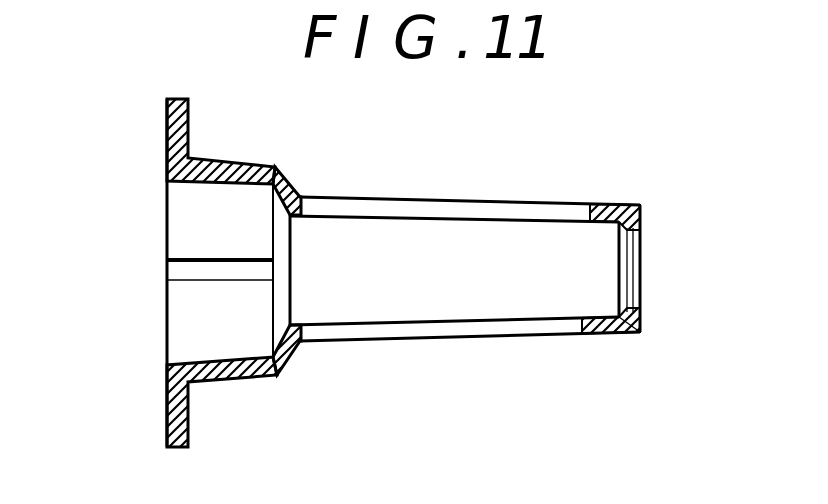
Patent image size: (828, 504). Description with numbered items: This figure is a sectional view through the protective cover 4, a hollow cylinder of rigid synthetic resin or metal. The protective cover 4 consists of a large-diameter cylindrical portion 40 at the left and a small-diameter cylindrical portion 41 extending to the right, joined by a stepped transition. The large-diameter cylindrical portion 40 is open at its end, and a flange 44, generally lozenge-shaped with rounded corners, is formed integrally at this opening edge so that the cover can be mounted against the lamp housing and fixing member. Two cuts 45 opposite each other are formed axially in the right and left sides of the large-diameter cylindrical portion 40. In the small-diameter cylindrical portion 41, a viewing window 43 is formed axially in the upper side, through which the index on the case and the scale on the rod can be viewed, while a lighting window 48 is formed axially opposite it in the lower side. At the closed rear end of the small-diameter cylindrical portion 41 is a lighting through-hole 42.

The protective cover 4 is at (433, 340).
The large-diameter cylindrical portion 40 is at (247, 377).
The small-diameter cylindrical portion 41 is at (618, 332).
The lighting through-hole 42 is at (640, 300).
The viewing window 43 is at (590, 213).
The flange 44 is at (167, 135).
The cuts 45 is at (167, 273).
The lighting window 48 is at (585, 331).